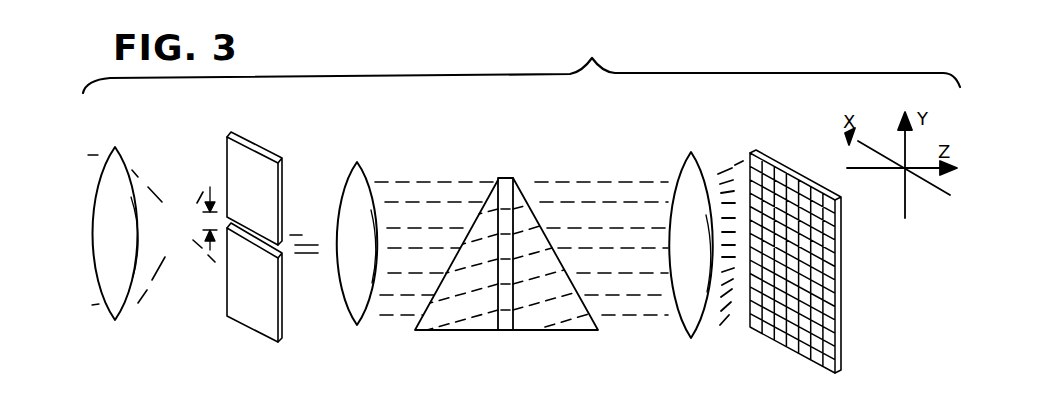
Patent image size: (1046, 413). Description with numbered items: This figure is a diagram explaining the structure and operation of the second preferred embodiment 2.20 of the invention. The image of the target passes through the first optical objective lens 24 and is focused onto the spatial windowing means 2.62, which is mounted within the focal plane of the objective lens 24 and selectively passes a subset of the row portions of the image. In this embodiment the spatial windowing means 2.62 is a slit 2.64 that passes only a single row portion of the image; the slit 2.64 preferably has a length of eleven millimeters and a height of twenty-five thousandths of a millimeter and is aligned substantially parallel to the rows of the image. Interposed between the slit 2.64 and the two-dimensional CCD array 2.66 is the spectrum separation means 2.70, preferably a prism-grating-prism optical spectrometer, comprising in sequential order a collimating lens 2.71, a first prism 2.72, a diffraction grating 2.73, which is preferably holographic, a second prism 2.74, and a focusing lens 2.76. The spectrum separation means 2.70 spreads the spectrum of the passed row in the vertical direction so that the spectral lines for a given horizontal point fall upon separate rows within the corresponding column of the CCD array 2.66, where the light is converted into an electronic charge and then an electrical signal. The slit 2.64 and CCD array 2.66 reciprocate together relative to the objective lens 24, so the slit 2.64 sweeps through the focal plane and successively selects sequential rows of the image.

The second preferred embodiment 2.20 is at (196, 118).
The first optical objective lens 24 is at (124, 303).
The spatial windowing means 2.62 is at (265, 150).
The slit 2.64 is at (192, 222).
The spectrum separation means 2.70 is at (333, 337).
The collimating lens 2.71 is at (358, 173).
The first prism 2.72 is at (490, 197).
The diffraction grating 2.73 is at (505, 332).
The second prism 2.74 is at (522, 193).
The focusing lens 2.76 is at (700, 172).
The two-dimensional CCD array 2.66 is at (797, 352).